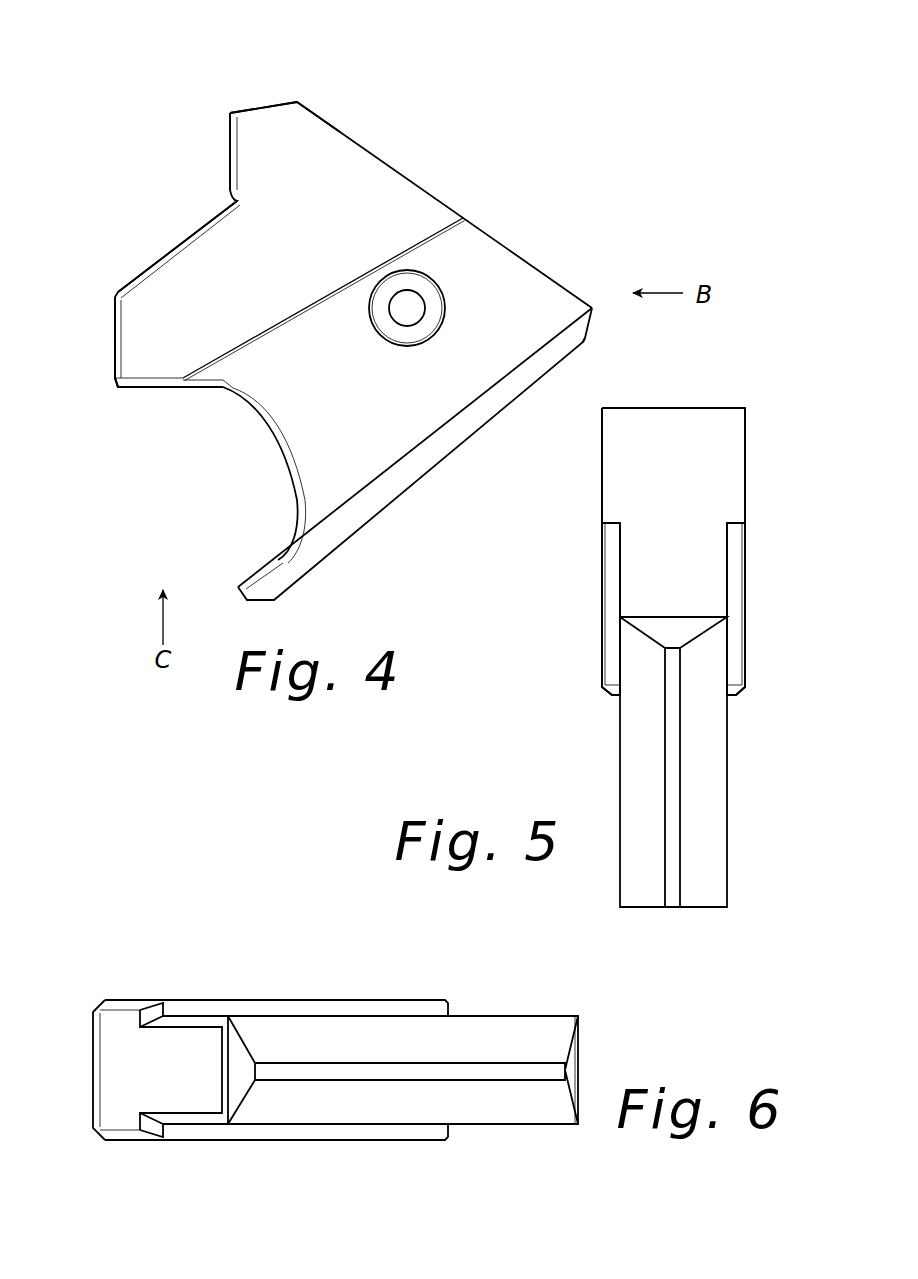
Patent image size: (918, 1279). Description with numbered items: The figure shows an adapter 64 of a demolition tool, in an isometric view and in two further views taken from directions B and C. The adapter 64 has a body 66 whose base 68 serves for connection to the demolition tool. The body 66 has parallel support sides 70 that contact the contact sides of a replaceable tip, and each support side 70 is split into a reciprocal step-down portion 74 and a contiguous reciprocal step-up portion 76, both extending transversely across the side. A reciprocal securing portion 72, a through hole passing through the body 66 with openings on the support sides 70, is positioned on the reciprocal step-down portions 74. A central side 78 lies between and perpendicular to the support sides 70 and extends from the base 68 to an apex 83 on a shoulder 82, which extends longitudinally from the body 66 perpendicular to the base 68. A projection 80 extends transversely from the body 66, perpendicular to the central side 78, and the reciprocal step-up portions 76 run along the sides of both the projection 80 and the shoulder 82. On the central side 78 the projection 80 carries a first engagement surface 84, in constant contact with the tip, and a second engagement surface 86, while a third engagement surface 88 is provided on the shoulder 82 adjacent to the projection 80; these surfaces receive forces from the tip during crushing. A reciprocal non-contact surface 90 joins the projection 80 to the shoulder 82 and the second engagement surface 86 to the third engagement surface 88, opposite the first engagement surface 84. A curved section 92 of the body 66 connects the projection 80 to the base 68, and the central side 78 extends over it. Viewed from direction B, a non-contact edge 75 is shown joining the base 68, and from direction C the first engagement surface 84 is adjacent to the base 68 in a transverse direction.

In FIG. 4, the adapter 64 is at (550, 160).
In FIG. 5, the adapter 64 is at (577, 725).
In FIG. 6, the adapter 64 is at (275, 978).
In FIG. 4, the body 66 is at (512, 240).
In FIG. 4, the base 68 is at (455, 452).
In FIG. 5, the base 68 is at (702, 793).
In FIG. 6, the base 68 is at (360, 1037).
In FIG. 4, the support sides 70 is at (428, 190).
In FIG. 6, the support sides 70 is at (212, 1000).
In FIG. 4, the reciprocal securing portion 72 is at (428, 272).
In FIG. 4, the reciprocal step-down portion 74 is at (517, 323).
In FIG. 5, the reciprocal step-down portion 74 is at (620, 588).
In FIG. 5, the non-contact edge 75 is at (680, 440).
In FIG. 4, the reciprocal step-up portion 76 is at (350, 180).
In FIG. 5, the reciprocal step-up portion 76 is at (603, 477).
In FIG. 4, the central side 78 is at (205, 390).
In FIG. 4, the projection 80 is at (110, 390).
In FIG. 4, the shoulder 82 is at (318, 93).
In FIG. 4, the apex 83 is at (267, 103).
In FIG. 4, the first engagement surface 84 is at (137, 390).
In FIG. 6, the first engagement surface 84 is at (117, 1027).
In FIG. 4, the second engagement surface 86 is at (110, 337).
In FIG. 4, the third engagement surface 88 is at (230, 158).
In FIG. 4, the reciprocal non-contact surface 90 is at (187, 240).
In FIG. 4, the curved section 92 is at (272, 433).